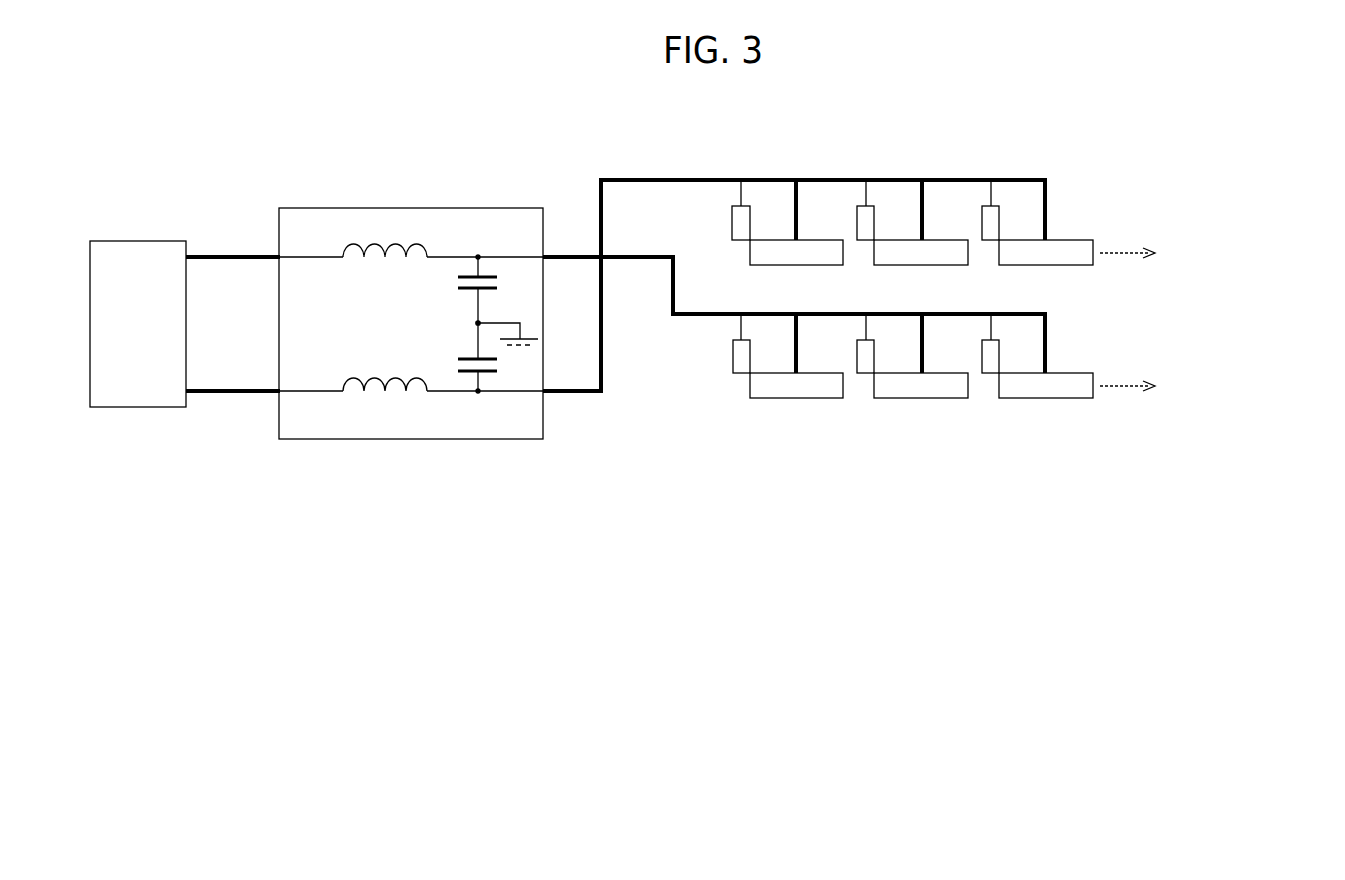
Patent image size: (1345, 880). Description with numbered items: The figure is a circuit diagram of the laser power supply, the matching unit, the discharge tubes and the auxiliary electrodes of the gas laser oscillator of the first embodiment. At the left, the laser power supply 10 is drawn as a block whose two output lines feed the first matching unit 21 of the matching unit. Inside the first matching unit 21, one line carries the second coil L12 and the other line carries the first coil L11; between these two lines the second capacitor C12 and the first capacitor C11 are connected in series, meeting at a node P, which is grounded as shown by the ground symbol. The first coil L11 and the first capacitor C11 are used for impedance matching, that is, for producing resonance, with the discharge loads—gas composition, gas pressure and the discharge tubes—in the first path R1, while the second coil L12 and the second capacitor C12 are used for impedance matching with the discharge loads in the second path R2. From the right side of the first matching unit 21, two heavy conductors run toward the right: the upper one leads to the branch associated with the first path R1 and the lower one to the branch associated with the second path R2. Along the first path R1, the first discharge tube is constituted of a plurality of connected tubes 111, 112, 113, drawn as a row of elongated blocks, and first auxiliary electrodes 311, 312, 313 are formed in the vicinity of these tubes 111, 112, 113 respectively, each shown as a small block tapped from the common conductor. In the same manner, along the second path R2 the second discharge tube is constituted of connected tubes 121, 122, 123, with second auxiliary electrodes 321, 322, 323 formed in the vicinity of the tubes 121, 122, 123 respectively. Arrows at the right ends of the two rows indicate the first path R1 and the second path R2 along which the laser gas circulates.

The laser power supply 10 is at (158, 241).
The first matching unit 21 is at (473, 208).
The second coil L12 is at (427, 246).
The first coil L11 is at (378, 393).
The second capacitor C12 is at (458, 283).
The first capacitor C11 is at (472, 357).
The node P is at (507, 320).
The first auxiliary electrode 311 is at (732, 226).
The first auxiliary electrode 312 is at (857, 230).
The first auxiliary electrode 313 is at (982, 230).
The first discharge tube 111 is at (767, 265).
The first discharge tube 112 is at (893, 265).
The first discharge tube 113 is at (1020, 265).
The second auxiliary electrode 321 is at (733, 358).
The second auxiliary electrode 322 is at (857, 363).
The second auxiliary electrode 323 is at (982, 363).
The second discharge tube 121 is at (785, 398).
The second discharge tube 122 is at (910, 398).
The second discharge tube 123 is at (1035, 398).
The first path R1 is at (1197, 269).
The second path R2 is at (1205, 399).